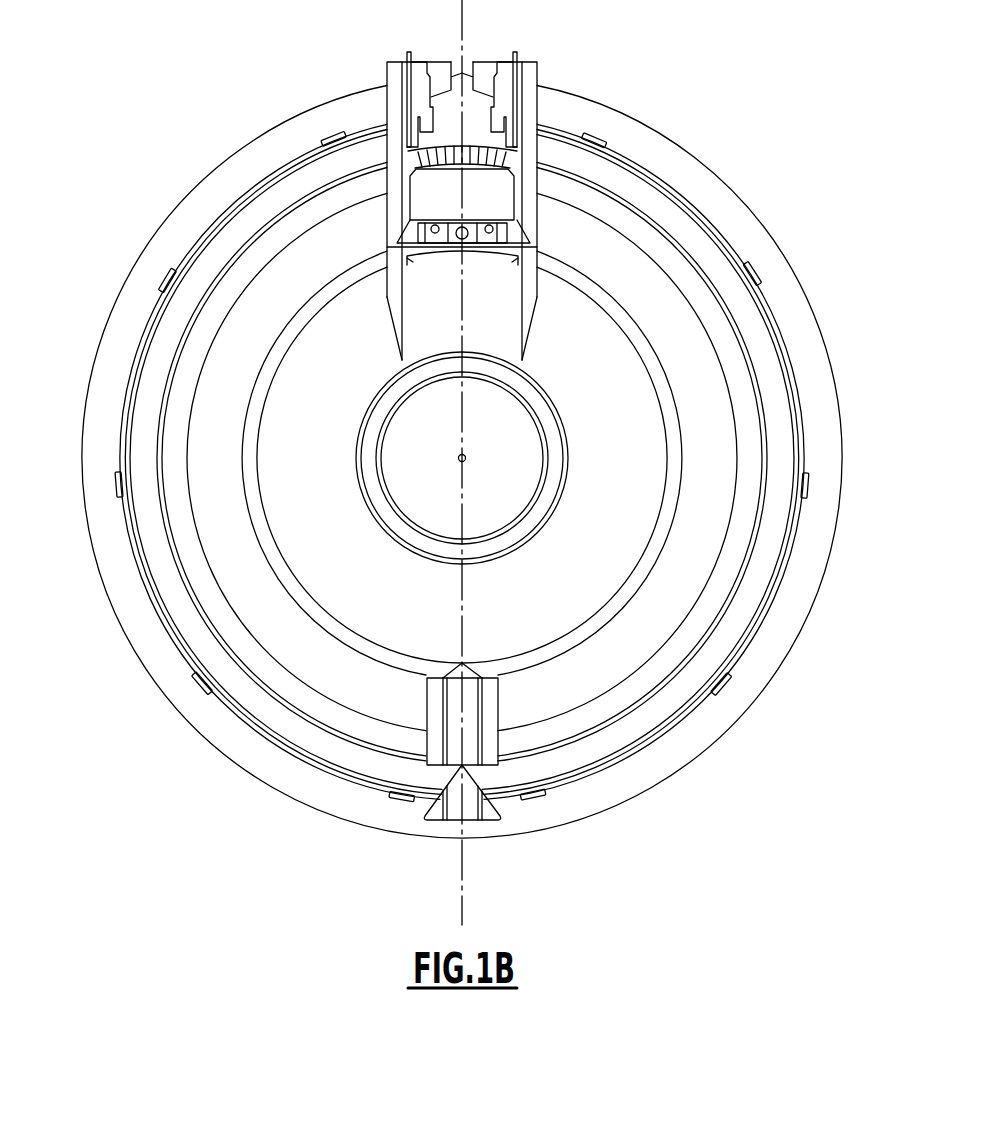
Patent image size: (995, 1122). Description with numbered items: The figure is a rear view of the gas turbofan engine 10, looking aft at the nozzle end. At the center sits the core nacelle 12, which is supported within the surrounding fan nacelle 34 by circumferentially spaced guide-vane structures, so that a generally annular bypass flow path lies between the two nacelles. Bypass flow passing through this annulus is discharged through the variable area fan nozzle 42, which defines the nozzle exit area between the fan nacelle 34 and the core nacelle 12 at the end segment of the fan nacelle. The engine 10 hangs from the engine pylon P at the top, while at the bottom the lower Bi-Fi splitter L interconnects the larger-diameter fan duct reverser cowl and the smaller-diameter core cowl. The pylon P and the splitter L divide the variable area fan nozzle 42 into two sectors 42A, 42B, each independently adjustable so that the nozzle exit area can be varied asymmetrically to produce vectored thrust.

The gas turbofan engine 10 is at (697, 83).
The core nacelle 12 is at (372, 590).
The fan nacelle 34 is at (712, 183).
The variable area fan nozzle 42 is at (465, 461).
The sector 42A is at (88, 244).
The sector 42B is at (885, 196).
The engine pylon P is at (523, 75).
The lower Bi-Fi splitter L is at (480, 743).